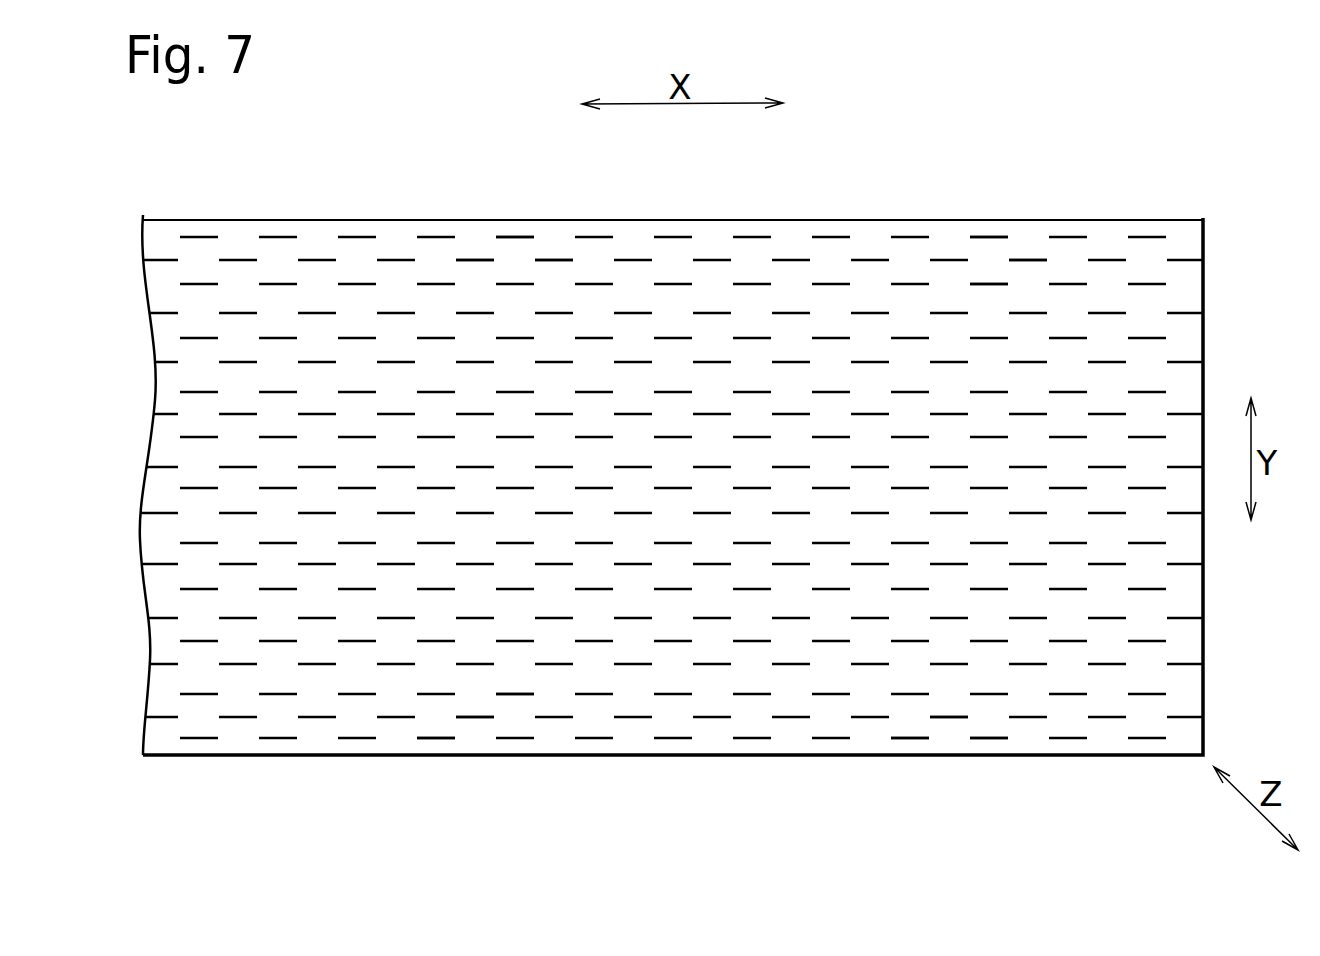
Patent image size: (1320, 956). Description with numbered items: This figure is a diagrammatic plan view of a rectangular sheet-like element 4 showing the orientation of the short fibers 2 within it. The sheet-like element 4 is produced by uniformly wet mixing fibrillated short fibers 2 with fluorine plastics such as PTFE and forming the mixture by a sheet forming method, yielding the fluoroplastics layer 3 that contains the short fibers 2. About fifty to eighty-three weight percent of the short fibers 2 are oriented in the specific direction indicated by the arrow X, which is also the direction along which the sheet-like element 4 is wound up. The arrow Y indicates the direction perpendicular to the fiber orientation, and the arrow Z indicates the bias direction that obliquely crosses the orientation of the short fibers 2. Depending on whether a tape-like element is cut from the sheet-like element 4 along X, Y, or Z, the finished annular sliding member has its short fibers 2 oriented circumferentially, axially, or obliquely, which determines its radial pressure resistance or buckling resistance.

The short fibers 2 is at (555, 260).
The fluoroplastics layer 3 is at (1153, 257).
The sheet-like element 4 is at (842, 207).